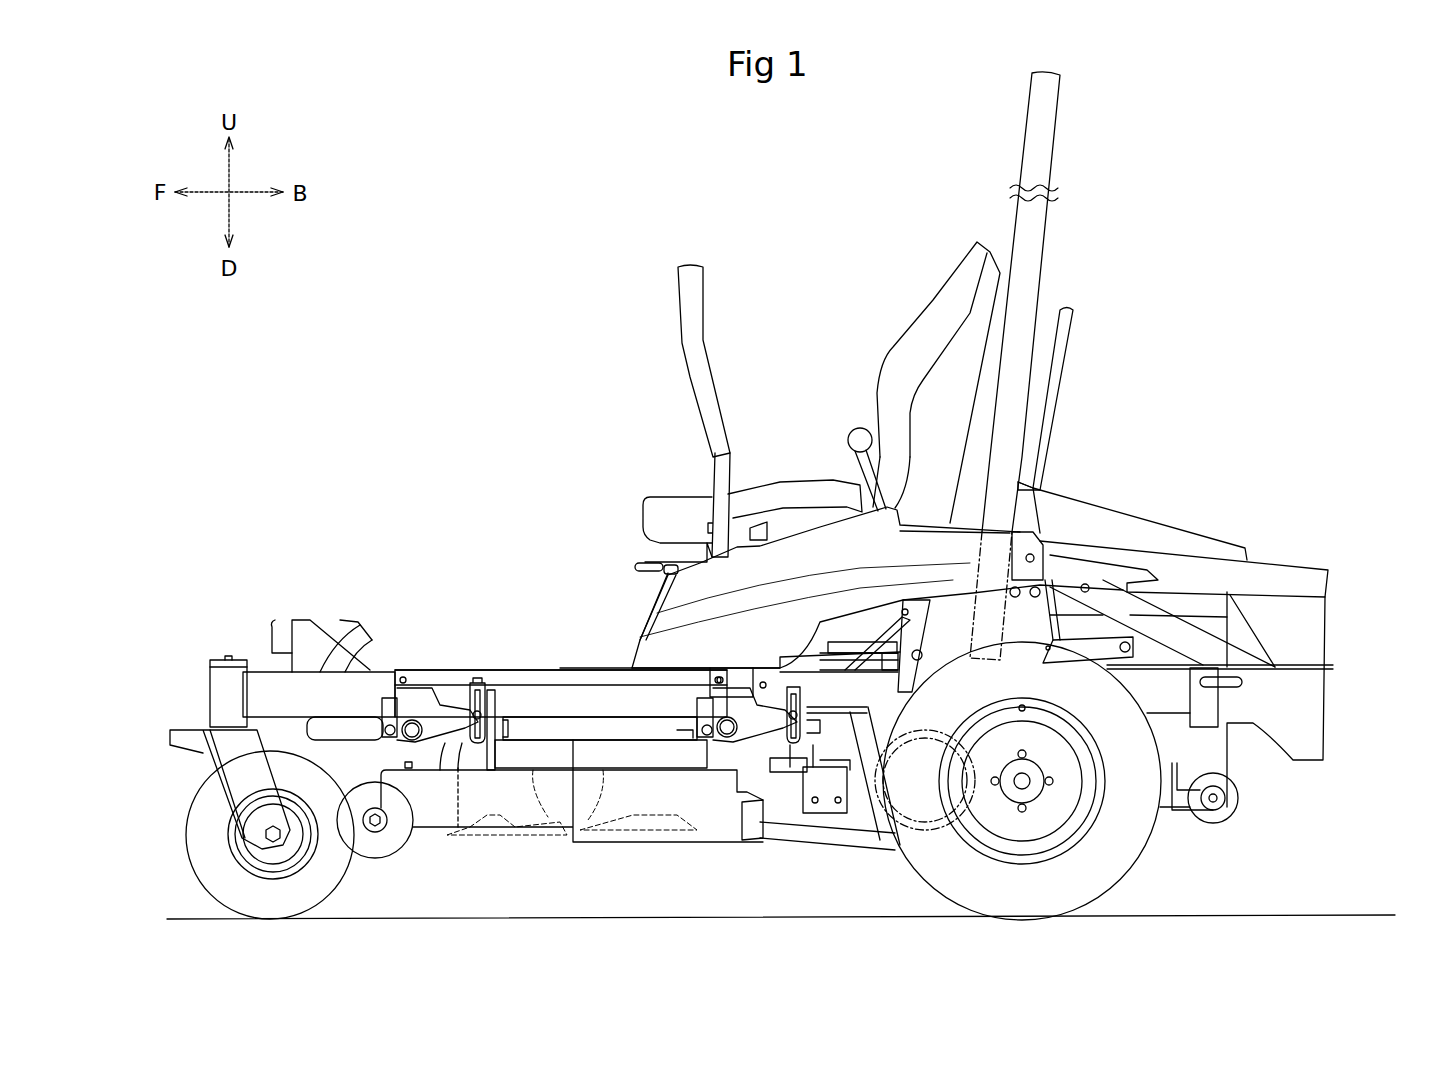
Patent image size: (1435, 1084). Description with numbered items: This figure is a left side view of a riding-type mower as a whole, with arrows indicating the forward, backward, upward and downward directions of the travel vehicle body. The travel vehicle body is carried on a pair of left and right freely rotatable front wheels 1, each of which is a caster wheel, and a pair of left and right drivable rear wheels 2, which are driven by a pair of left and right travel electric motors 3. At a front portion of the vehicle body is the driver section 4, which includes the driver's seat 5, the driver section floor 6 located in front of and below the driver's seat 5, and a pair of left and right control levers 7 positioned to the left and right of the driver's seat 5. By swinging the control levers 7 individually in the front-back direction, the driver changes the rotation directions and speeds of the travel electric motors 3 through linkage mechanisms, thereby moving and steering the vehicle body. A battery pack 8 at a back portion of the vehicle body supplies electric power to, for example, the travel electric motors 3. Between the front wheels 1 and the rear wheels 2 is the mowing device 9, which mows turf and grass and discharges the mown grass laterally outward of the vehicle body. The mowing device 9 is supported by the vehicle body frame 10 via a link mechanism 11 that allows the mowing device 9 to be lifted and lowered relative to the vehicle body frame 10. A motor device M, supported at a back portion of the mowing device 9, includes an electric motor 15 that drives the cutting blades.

The front wheels 1 is at (215, 848).
The rear wheels 2 is at (1103, 848).
The travel electric motors 3 is at (905, 830).
The driver section 4 is at (946, 665).
The driver's seat 5 is at (905, 370).
The driver section floor 6 is at (380, 660).
The control levers 7 is at (692, 278).
The battery pack 8 is at (1239, 762).
The mowing device 9 is at (600, 848).
The vehicle body frame 10 is at (577, 700).
The link mechanism 11 is at (500, 653).
The electric motor 15 is at (778, 798).
The motor device M is at (835, 866).